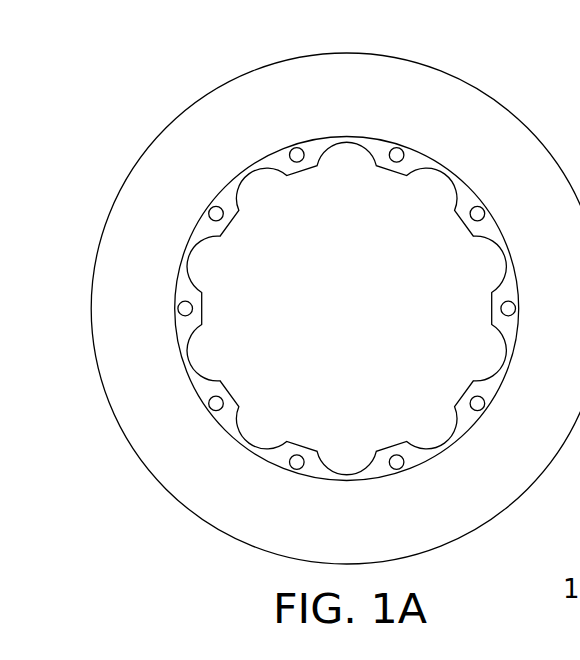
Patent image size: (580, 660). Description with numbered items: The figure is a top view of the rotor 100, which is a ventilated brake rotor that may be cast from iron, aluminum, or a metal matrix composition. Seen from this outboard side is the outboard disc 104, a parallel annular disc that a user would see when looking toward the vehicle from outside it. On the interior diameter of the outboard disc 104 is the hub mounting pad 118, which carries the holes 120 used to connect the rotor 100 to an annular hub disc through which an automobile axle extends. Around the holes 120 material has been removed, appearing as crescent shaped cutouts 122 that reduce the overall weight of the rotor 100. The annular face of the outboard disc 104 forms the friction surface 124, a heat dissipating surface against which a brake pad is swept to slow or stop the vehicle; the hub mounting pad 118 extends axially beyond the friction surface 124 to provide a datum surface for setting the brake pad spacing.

The rotor 100 is at (310, 286).
The outboard disc 104 is at (243, 73).
The hub mounting pad 118 is at (279, 332).
The holes 120 is at (297, 156).
The crescent shaped cutouts 122 is at (205, 247).
The friction surface 124 is at (346, 334).